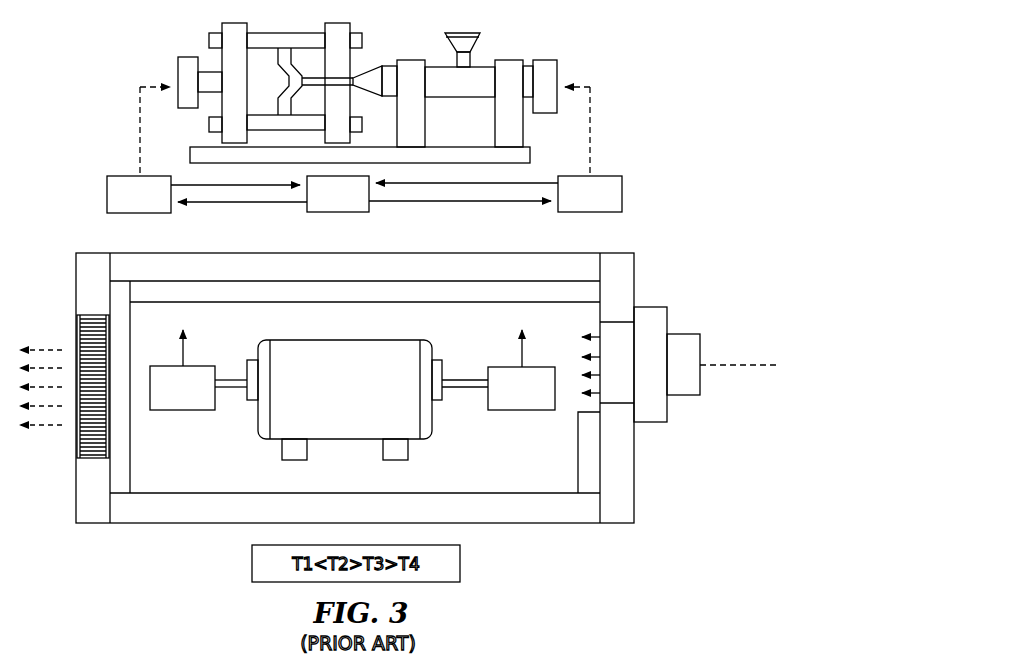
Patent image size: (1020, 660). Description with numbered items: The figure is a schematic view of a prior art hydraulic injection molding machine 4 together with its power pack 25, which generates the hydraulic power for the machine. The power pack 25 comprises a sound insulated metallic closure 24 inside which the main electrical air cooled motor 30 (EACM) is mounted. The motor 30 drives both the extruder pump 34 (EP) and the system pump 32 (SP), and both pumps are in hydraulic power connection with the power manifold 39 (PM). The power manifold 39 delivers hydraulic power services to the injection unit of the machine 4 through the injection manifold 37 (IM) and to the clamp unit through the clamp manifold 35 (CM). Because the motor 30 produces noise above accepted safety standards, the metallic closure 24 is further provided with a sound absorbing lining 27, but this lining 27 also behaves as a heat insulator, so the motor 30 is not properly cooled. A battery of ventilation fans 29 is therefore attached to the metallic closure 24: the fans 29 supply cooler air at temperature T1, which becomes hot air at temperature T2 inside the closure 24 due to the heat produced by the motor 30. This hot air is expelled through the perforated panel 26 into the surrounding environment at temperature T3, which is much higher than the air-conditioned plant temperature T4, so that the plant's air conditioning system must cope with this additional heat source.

The hydraulic injection molding machine 4 is at (395, 32).
The sound insulated metallic closure 24 is at (94, 510).
The power pack 25 is at (200, 553).
The perforated panel 26 is at (88, 443).
The sound absorbing lining 27 is at (472, 290).
The ventilation fans 29 is at (651, 312).
The electrical air cooled motor 30 is at (336, 426).
The system pump 32 is at (186, 404).
The extruder pump 34 is at (497, 408).
The clamp manifold 35 is at (107, 197).
The injection manifold 37 is at (612, 182).
The power manifold 39 is at (316, 213).
The cooler air temperature T1 is at (618, 367).
The hot air temperature inside closure T2 is at (143, 474).
The expelled air temperature T3 is at (48, 348).
The air-conditioned plant temperature T4 is at (78, 133).